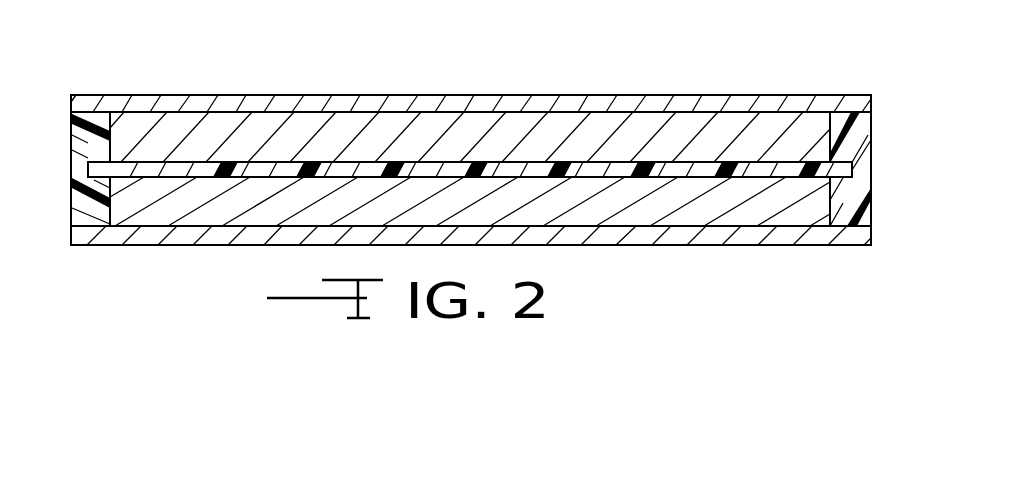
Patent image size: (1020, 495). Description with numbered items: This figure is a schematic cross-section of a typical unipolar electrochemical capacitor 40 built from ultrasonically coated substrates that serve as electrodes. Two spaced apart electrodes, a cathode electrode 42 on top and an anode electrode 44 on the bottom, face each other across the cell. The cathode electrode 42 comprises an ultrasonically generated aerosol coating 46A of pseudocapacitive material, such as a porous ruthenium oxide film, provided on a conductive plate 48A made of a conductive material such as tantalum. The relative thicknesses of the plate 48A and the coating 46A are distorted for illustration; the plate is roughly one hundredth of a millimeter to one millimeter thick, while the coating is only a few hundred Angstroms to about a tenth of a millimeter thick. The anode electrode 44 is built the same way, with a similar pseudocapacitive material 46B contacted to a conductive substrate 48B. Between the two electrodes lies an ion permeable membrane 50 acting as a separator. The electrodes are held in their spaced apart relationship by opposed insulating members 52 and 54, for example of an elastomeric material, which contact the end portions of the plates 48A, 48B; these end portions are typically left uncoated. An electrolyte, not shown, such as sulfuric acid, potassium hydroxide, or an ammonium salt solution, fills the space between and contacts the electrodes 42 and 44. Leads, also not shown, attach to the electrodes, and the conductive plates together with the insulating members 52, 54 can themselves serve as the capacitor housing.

The unipolar electrochemical capacitor 40 is at (653, 80).
The cathode electrode 42 is at (137, 85).
The anode electrode 44 is at (640, 252).
The pseudocapacitive coating 46A is at (218, 128).
The pseudocapacitive material 46B is at (172, 205).
The conductive plate 48A is at (340, 107).
The conductive substrate 48B is at (778, 235).
The ion permeable membrane 50 is at (447, 170).
The insulating member 52 is at (857, 138).
The insulating member 54 is at (83, 205).